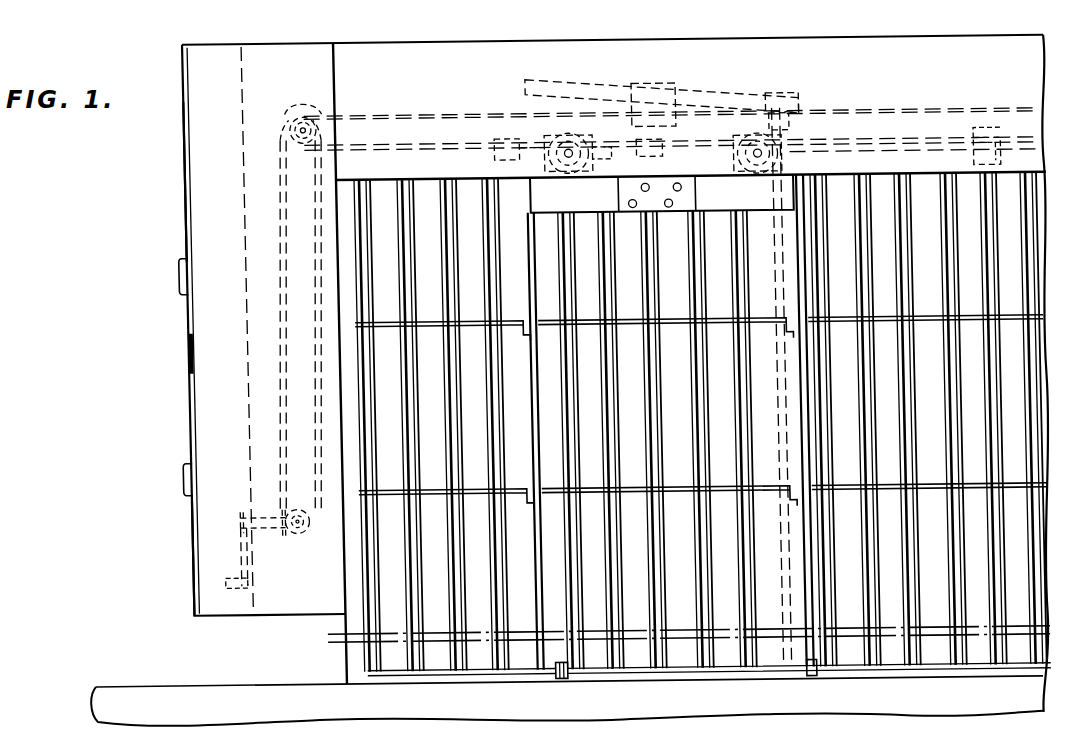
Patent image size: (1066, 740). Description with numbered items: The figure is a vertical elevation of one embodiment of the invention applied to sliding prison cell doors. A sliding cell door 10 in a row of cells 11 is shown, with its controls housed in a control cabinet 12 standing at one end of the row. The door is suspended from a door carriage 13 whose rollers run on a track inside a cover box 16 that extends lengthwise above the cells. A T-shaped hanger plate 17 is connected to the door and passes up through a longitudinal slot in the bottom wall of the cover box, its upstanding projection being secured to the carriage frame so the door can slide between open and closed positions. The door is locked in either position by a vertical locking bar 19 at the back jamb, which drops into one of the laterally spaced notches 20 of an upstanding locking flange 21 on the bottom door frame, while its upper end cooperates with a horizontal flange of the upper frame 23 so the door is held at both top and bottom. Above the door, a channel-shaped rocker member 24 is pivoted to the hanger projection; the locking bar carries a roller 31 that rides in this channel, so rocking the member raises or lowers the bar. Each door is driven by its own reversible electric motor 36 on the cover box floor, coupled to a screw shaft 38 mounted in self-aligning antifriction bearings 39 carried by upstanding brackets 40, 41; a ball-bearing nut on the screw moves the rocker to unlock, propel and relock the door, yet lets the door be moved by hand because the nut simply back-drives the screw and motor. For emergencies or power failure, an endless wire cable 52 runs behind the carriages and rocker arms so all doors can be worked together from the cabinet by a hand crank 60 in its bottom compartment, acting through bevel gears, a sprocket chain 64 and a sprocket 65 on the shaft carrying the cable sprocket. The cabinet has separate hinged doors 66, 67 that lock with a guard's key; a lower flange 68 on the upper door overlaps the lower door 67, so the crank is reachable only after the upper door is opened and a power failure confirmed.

The sliding cell door 10 is at (690, 389).
The cells 11 is at (1004, 392).
The control cabinet 12 is at (282, 91).
The door carriage 13 is at (756, 186).
The cover box 16 is at (780, 44).
The hanger plate 17 is at (682, 192).
The locking bar 19 is at (803, 676).
The notches 20 is at (553, 681).
The locking flange 21 is at (642, 676).
The upper frame 23 is at (588, 208).
The rocker member 24 is at (718, 102).
The roller 31 is at (795, 102).
The electric motor 36 is at (492, 160).
The screw shaft 38 is at (822, 146).
The antifriction bearings 39 is at (648, 146).
The bracket 40 is at (975, 142).
The bracket 41 is at (588, 150).
The endless wire cable 52 is at (413, 118).
The hand crank 60 is at (236, 595).
The sprocket chain 64 is at (276, 377).
The sprocket 65 is at (319, 116).
The upper hinged door 66 is at (188, 172).
The lower hinged door 67 is at (190, 543).
The lower flange 68 is at (186, 354).